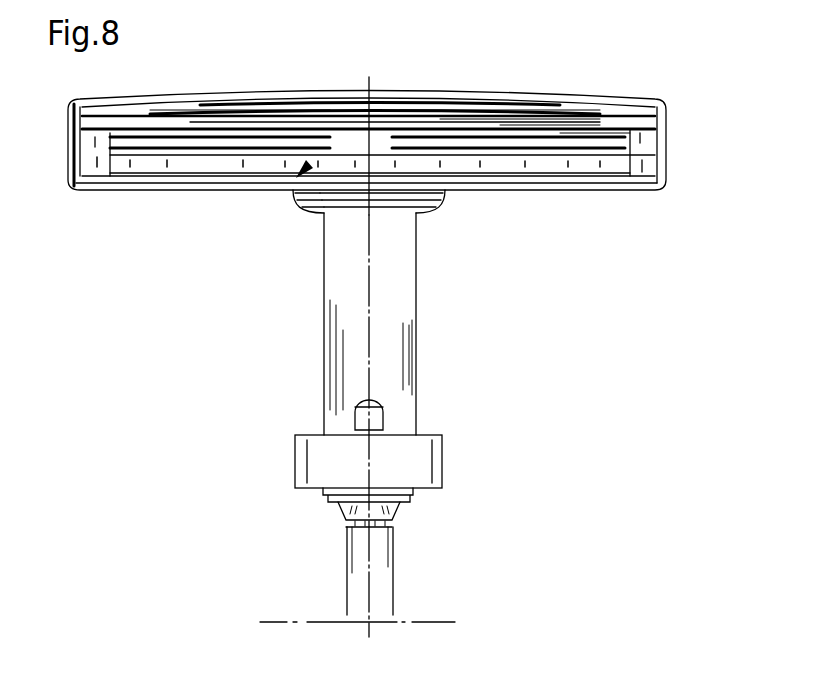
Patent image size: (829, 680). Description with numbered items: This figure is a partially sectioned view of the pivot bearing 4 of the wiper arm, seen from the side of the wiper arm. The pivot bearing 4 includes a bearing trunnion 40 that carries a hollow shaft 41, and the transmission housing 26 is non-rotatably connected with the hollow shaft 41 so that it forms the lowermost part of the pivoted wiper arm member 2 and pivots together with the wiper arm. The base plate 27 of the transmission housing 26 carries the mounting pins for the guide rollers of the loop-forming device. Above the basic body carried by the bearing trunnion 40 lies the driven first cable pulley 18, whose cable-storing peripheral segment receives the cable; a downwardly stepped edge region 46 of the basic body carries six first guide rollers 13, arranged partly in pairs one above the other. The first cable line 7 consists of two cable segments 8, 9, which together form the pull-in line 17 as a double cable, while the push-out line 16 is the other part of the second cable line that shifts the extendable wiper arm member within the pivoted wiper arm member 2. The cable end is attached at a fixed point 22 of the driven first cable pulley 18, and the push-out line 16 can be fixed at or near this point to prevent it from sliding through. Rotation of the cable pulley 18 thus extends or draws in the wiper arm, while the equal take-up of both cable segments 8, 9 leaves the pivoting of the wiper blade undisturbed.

The pivoted wiper arm member 2 is at (444, 210).
The pivot bearing 4 is at (293, 192).
The first cable line 7 is at (510, 113).
The cable segment 8 is at (531, 152).
The cable segment 9 is at (242, 141).
The first guide roller 13 is at (166, 143).
The push-out line 16 is at (462, 115).
The pull-in line 17 is at (162, 112).
The driven first cable pulley 18 is at (543, 113).
The fixed point 22 is at (500, 110).
The transmission housing 26 is at (388, 92).
The base plate 27 is at (582, 185).
The bearing trunnion 40 is at (378, 562).
The hollow shaft 41 is at (398, 403).
The stepped edge region 46 is at (483, 163).